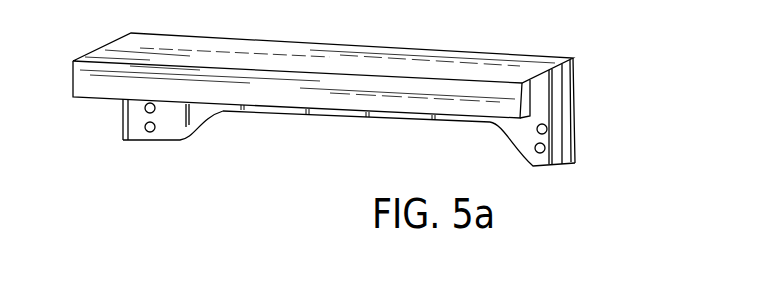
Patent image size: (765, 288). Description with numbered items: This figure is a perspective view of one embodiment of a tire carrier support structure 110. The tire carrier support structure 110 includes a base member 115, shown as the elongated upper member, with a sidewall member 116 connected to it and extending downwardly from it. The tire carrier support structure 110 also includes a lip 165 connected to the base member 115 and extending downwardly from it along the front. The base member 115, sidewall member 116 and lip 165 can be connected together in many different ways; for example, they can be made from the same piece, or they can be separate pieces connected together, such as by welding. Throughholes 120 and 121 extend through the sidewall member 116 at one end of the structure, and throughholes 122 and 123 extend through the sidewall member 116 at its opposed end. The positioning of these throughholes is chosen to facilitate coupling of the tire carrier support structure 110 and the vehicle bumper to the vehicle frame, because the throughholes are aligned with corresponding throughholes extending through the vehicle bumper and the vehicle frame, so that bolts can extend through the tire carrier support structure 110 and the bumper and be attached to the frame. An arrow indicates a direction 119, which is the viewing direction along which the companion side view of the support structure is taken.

The tire carrier support structure 110 is at (427, 32).
The base member 115 is at (232, 47).
The sidewall member 116 is at (173, 120).
The direction 119 is at (599, 135).
The throughhole 120 is at (144, 107).
The throughhole 121 is at (147, 131).
The throughhole 122 is at (535, 131).
The throughhole 123 is at (540, 154).
The lip 165 is at (333, 100).